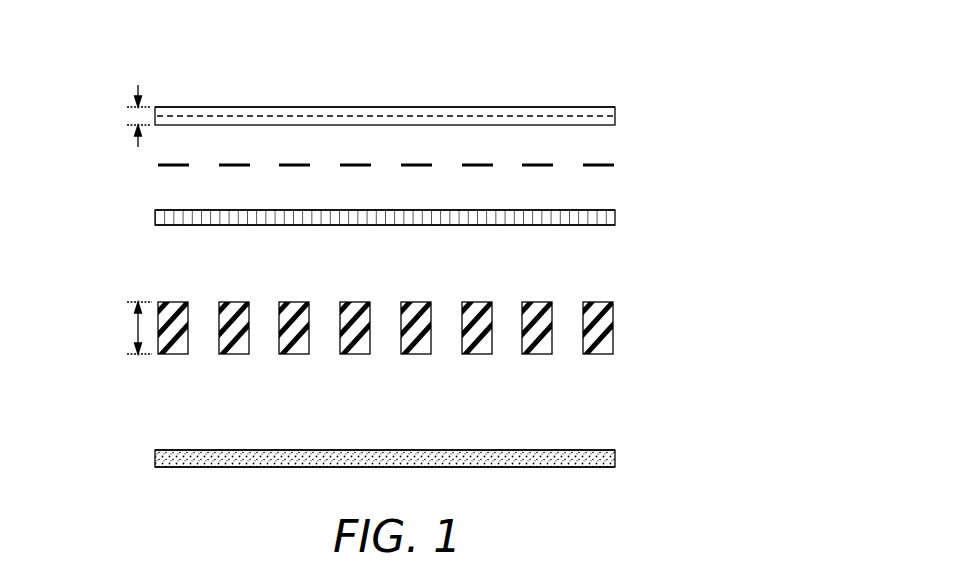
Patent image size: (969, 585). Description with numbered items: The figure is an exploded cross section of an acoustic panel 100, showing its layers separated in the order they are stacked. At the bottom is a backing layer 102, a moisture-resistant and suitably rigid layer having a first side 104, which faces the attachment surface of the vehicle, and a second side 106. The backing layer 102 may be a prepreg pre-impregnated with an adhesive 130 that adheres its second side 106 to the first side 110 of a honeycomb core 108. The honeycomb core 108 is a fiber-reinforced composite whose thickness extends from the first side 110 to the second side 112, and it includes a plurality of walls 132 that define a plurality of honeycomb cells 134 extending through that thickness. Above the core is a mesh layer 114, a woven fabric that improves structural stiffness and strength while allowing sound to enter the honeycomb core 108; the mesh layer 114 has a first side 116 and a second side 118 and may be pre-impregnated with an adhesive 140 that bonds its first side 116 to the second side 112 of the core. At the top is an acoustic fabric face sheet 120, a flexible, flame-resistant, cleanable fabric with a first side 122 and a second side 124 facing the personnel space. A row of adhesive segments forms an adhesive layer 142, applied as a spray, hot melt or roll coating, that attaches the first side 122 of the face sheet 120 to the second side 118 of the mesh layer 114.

The acoustic panel 100 is at (110, 56).
The backing layer 102 is at (418, 463).
The first side of backing layer 104 is at (296, 469).
The second side of backing layer 106 is at (294, 448).
The honeycomb core 108 is at (412, 328).
The first side of honeycomb core 110 is at (296, 356).
The second side of honeycomb core 112 is at (167, 298).
The mesh layer 114 is at (393, 217).
The first side of mesh layer 116 is at (187, 228).
The second side of mesh layer 118 is at (181, 208).
The acoustic fabric face sheet 120 is at (422, 118).
The first side of acoustic fabric face sheet 122 is at (318, 128).
The second side of acoustic fabric face sheet 124 is at (306, 105).
The adhesive 130 is at (552, 458).
The walls 132 is at (598, 298).
The honeycomb cells 134 is at (567, 358).
The adhesive 140 is at (395, 222).
The adhesive layer 142 is at (608, 163).